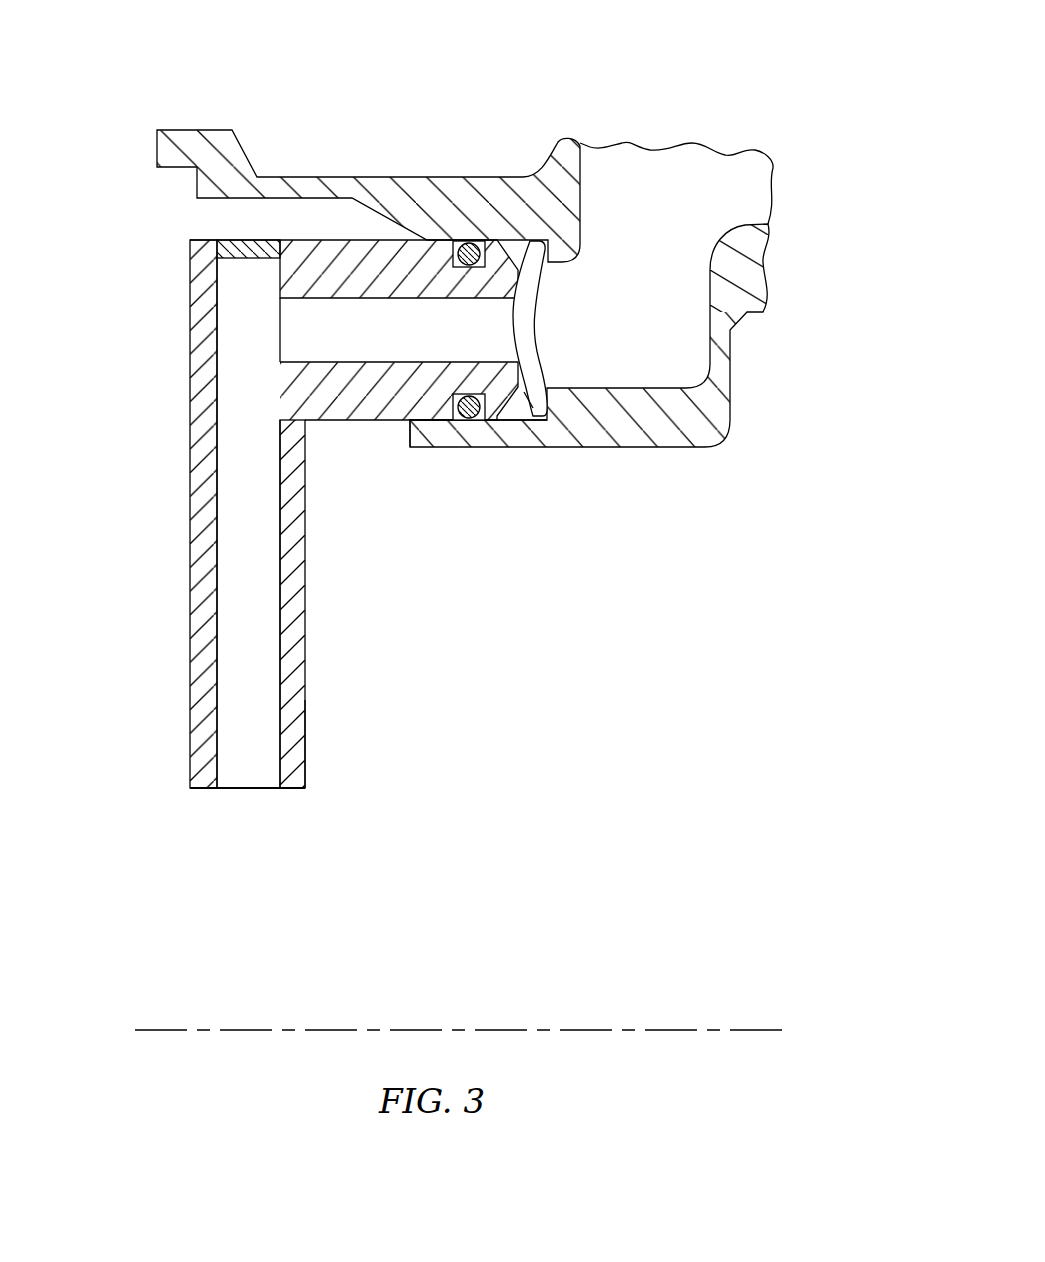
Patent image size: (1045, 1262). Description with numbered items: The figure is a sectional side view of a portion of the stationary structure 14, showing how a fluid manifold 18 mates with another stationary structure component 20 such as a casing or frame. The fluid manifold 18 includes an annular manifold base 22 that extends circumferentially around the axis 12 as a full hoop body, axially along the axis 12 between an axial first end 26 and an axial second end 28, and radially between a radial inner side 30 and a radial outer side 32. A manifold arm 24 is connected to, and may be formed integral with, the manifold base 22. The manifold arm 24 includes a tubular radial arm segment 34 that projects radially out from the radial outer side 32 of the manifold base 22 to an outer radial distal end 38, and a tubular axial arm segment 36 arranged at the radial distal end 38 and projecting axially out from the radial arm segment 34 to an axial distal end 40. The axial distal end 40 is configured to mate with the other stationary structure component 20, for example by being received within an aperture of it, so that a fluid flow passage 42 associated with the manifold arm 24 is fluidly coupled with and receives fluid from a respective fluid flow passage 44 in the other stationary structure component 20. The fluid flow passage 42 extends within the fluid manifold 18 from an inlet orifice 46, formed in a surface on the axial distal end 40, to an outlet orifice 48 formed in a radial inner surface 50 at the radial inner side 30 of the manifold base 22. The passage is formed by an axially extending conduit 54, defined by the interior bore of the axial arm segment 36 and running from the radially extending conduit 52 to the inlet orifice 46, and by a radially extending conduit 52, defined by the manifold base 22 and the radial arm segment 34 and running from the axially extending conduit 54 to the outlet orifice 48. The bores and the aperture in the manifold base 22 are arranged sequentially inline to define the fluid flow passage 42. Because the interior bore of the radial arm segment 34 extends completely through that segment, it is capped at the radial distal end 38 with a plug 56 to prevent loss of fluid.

The axis 12 is at (747, 1028).
The stationary structure 14 is at (721, 75).
The fluid manifold 18 is at (160, 666).
The other stationary structure component 20 is at (485, 163).
The manifold base 22 is at (316, 762).
The manifold arm 24 is at (316, 622).
The axial first end 26 is at (200, 780).
The axial second end 28 is at (305, 777).
The radial inner side 30 is at (293, 788).
The radial outer side 32 is at (302, 740).
The radial arm segment 34 is at (192, 538).
The axial arm segment 36 is at (360, 420).
The radial distal end 38 is at (197, 240).
The axial distal end 40 is at (528, 420).
The fluid flow passage 42 is at (240, 440).
The fluid flow passage 44 is at (653, 190).
The inlet orifice 46 is at (513, 338).
The outlet orifice 48 is at (240, 788).
The radial inner surface 50 is at (293, 788).
The radially extending conduit 52 is at (232, 483).
The axially extending conduit 54 is at (330, 313).
The plug 56 is at (250, 243).